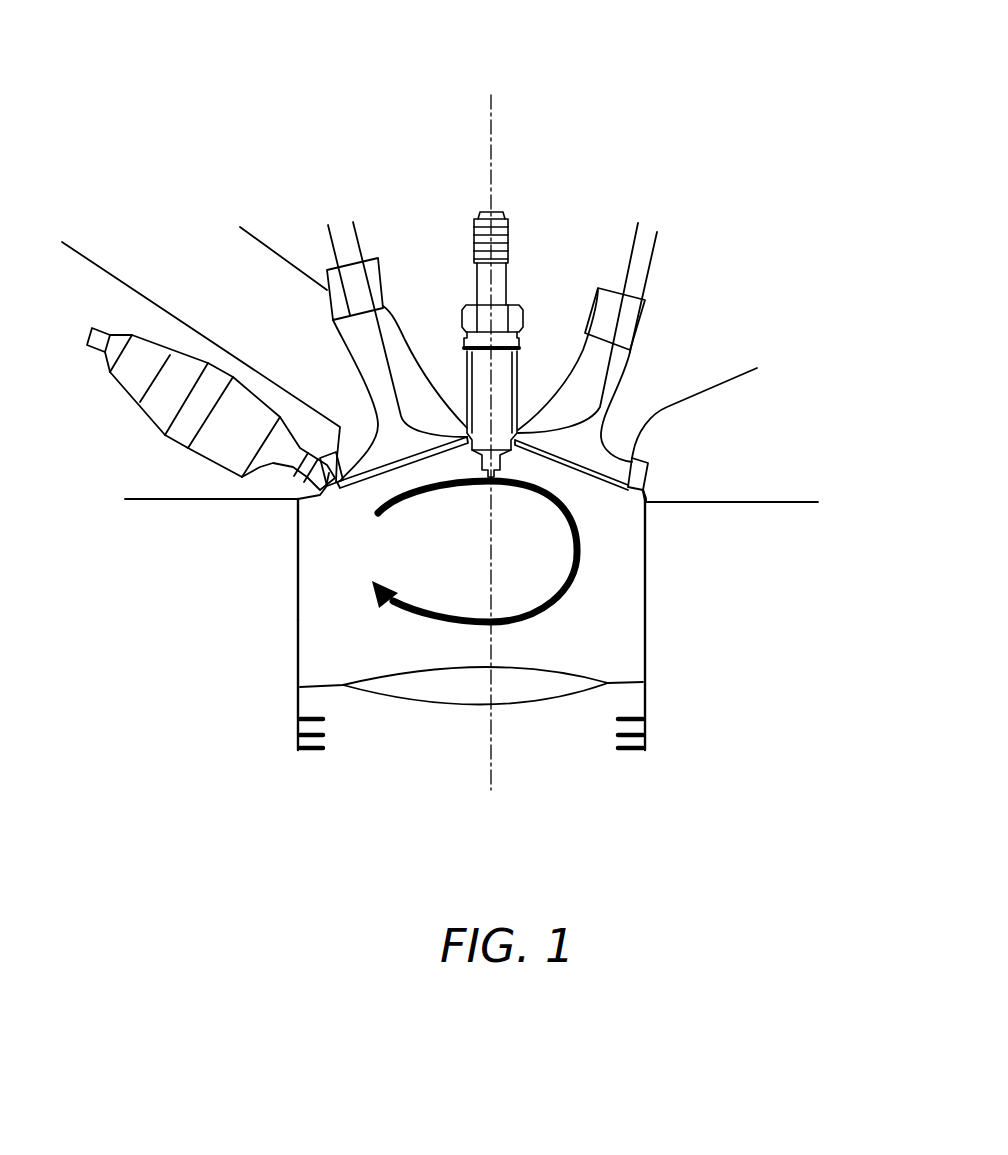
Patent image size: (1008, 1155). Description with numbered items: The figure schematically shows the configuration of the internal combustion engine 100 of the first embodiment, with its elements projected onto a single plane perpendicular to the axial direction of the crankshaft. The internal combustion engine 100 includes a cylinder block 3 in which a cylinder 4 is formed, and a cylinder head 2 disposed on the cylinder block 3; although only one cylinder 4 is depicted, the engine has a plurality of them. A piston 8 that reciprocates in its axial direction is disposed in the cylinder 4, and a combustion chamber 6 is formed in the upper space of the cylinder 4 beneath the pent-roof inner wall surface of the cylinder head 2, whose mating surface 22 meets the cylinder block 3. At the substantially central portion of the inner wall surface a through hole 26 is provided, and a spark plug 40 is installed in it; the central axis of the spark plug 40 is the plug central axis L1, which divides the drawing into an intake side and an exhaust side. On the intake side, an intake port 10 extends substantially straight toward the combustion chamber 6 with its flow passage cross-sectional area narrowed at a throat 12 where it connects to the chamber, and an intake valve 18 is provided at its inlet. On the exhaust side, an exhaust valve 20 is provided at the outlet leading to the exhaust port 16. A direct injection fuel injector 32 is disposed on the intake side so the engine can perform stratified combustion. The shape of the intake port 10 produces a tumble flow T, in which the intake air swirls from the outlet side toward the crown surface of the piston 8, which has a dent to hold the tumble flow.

The internal combustion engine 100 is at (737, 134).
The cylinder head 2 is at (795, 474).
The cylinder block 3 is at (797, 545).
The cylinder 4 is at (285, 592).
The combustion chamber 6 is at (320, 640).
The piston 8 is at (613, 703).
The intake port 10 is at (268, 268).
The throat 12 is at (352, 438).
The exhaust port 16 is at (708, 360).
The intake valve 18 is at (347, 252).
The exhaust valve 20 is at (633, 265).
The mating surface 22 is at (162, 500).
The through hole 26 is at (515, 443).
The direct injection fuel injector 32 is at (163, 400).
The spark plug 40 is at (485, 212).
The tumble flow T is at (568, 598).
The plug central axis L1 is at (491, 402).